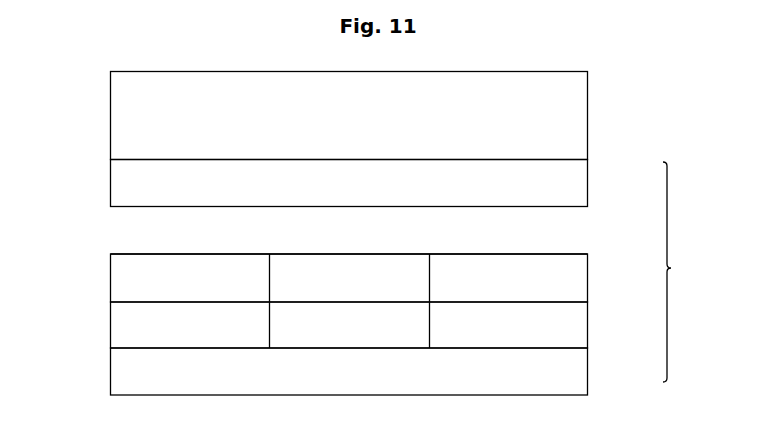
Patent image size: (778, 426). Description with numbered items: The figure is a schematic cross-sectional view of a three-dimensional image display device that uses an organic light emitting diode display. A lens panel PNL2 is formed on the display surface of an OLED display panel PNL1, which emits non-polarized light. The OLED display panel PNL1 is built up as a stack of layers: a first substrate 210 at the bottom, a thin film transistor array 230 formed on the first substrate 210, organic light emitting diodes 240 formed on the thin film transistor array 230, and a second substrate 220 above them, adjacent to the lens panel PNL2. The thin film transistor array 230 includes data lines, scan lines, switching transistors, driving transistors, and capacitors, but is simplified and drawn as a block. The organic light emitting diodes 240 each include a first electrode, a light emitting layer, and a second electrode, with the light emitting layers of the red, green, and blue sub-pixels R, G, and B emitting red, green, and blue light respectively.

The lens panel PNL2 is at (123, 117).
The OLED display panel PNL1 is at (692, 272).
The second substrate 220 is at (576, 181).
The organic light emitting diodes 240 is at (576, 283).
The thin film transistor array 230 is at (576, 325).
The first substrate 210 is at (576, 371).